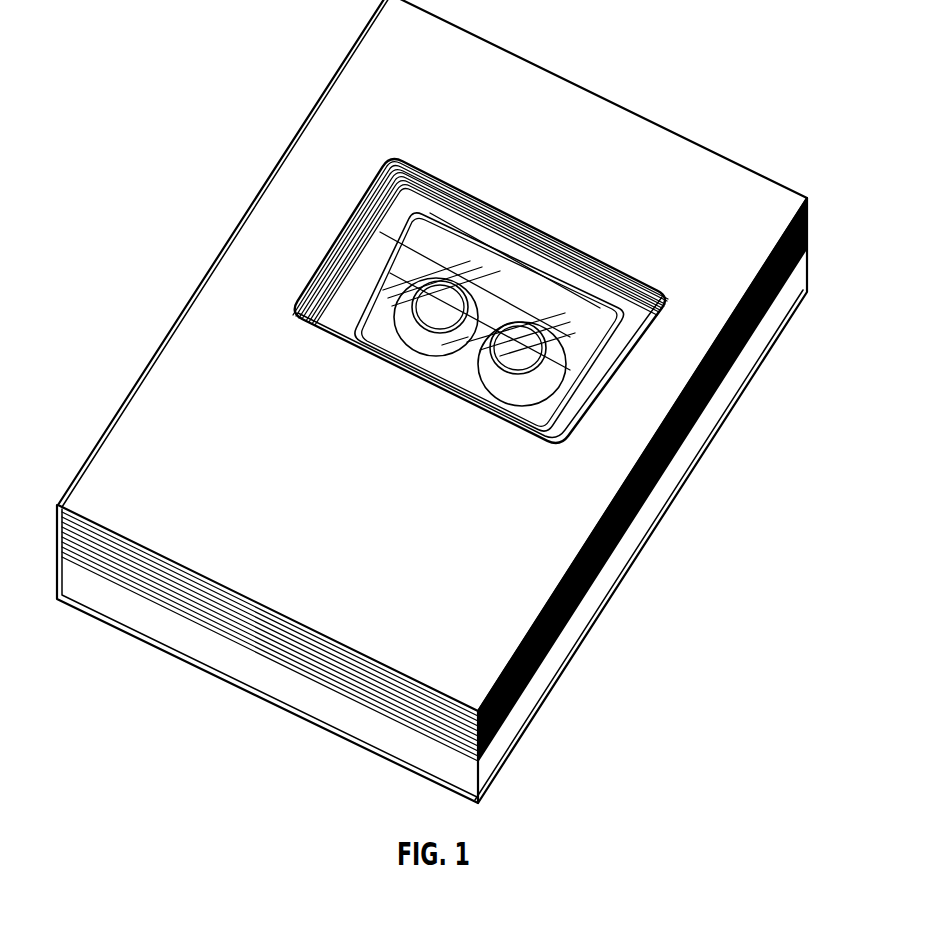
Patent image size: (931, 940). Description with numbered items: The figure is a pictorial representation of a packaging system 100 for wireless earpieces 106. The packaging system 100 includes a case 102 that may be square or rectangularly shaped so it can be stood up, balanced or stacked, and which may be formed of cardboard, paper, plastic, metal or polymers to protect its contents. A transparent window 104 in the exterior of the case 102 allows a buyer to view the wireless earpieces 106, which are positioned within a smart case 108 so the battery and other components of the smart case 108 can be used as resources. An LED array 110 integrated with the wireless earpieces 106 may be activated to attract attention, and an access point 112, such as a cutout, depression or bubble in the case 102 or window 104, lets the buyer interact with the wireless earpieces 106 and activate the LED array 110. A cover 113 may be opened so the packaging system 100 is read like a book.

The packaging system 100 is at (530, 74).
The case 102 is at (720, 170).
The transparent window 104 is at (338, 238).
The wireless earpieces 106 is at (530, 343).
The smart case 108 is at (527, 297).
The LED array 110 is at (517, 363).
The access point 112 is at (415, 283).
The cover 113 is at (477, 658).